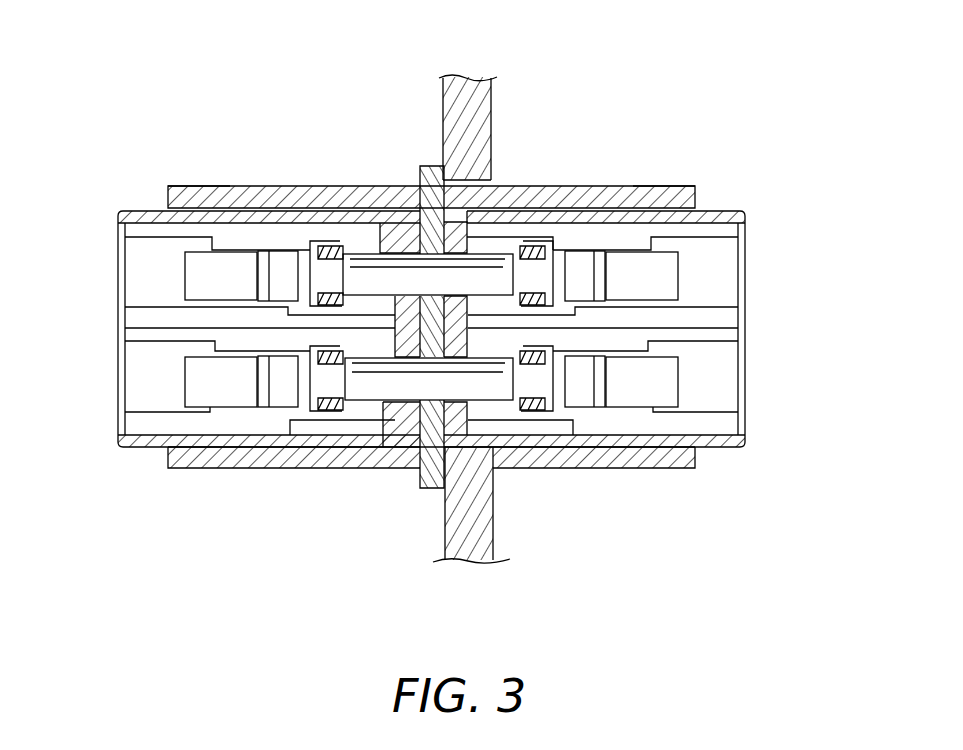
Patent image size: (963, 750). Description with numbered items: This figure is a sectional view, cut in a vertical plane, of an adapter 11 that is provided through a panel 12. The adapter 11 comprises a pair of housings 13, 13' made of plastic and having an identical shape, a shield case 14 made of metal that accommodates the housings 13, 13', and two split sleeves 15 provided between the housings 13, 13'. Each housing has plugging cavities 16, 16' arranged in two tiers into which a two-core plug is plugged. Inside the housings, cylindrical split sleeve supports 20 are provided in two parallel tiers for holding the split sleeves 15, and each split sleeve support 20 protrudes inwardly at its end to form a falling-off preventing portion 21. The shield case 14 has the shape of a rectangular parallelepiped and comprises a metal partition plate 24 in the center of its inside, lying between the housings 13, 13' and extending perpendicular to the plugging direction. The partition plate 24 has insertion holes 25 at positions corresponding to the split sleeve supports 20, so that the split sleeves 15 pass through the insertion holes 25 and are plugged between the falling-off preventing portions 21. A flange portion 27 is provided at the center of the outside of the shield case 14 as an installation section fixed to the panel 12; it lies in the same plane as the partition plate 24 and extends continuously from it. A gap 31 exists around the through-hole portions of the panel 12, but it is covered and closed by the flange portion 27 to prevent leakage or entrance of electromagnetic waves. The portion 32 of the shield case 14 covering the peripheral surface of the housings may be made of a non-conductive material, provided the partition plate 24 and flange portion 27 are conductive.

The adapter 11 is at (689, 138).
The panel 12 is at (473, 112).
The housing 13 is at (238, 282).
The housing 13' is at (634, 285).
The shield case 14 is at (257, 184).
The split sleeve 15 is at (488, 370).
The plugging cavity 16 is at (217, 336).
The plugging cavity 16' is at (656, 336).
The split sleeve support 20 is at (357, 253).
The falling-off preventing portion 21 is at (306, 250).
The partition plate 24 is at (495, 226).
The insertion hole 25 is at (430, 402).
The flange portion 27 is at (428, 166).
The gap 31 is at (488, 469).
The portion for covering the peripheral surface of the housing 32 is at (203, 185).